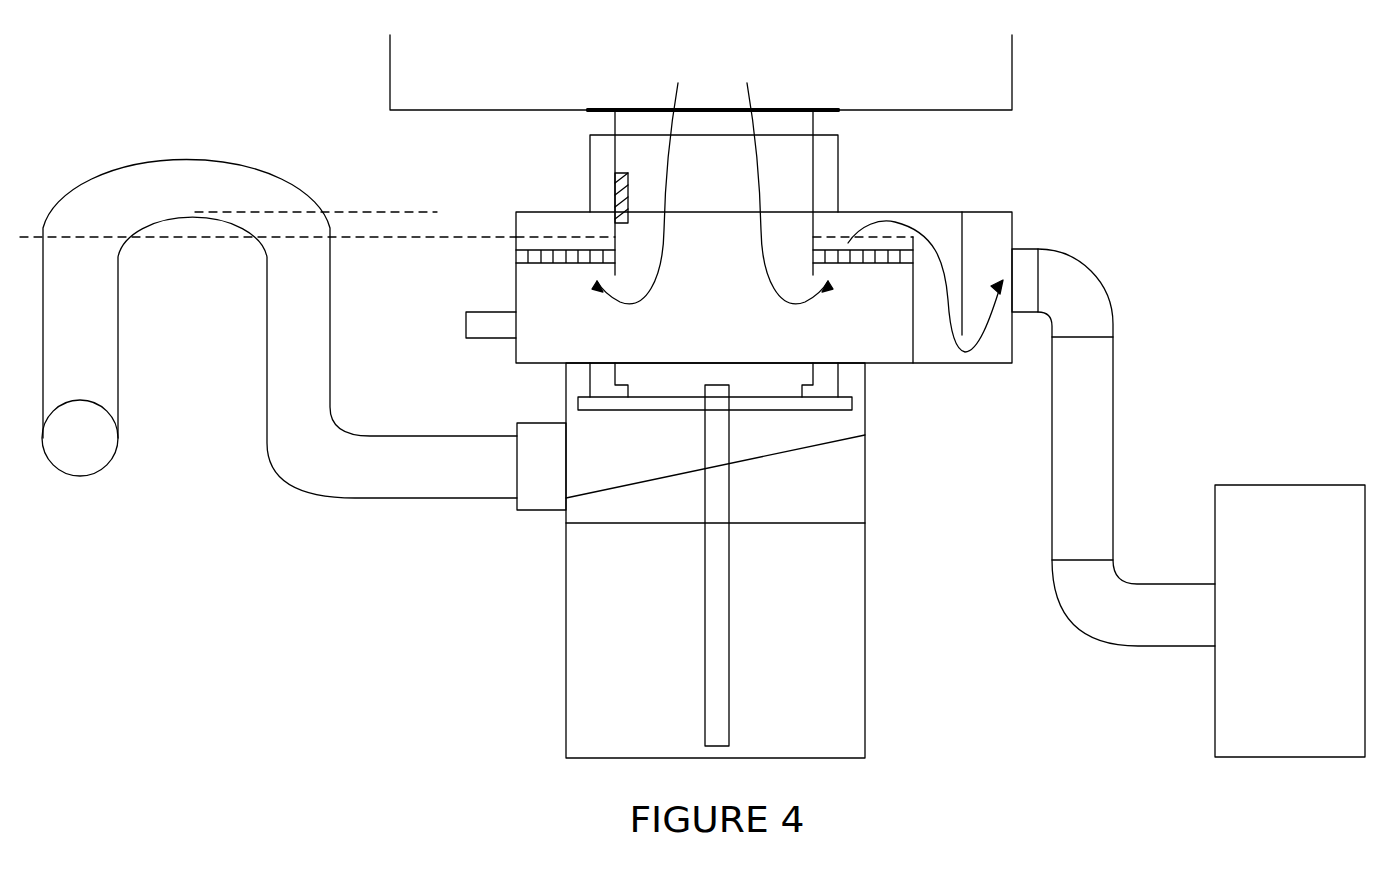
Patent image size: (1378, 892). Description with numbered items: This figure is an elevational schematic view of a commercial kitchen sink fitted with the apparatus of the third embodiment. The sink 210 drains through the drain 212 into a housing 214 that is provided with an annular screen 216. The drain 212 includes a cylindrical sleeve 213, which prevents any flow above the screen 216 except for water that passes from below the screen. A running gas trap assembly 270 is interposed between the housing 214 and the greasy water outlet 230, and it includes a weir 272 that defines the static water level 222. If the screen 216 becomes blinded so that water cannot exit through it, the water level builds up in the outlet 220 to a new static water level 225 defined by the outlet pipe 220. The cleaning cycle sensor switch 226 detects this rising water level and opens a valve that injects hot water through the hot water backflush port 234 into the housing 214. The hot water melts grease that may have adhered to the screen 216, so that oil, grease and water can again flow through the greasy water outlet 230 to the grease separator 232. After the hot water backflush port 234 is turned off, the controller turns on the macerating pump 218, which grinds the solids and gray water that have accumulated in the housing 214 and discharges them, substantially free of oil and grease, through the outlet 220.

The sink 210 is at (1012, 95).
The drain 212 is at (813, 122).
The cylindrical sleeve 213 is at (813, 172).
The housing 214 is at (890, 212).
The annular screen 216 is at (557, 263).
The macerating pump 218 is at (815, 657).
The outlet 220 is at (417, 475).
The static water level 222 is at (365, 237).
The new static water level 225 is at (365, 212).
The cleaning cycle sensor switch 226 is at (615, 202).
The greasy water outlet 230 is at (1088, 312).
The grease separator 232 is at (1263, 533).
The hot water backflush port 234 is at (477, 323).
The running gas trap assembly 270 is at (1003, 225).
The weir 272 is at (915, 337).